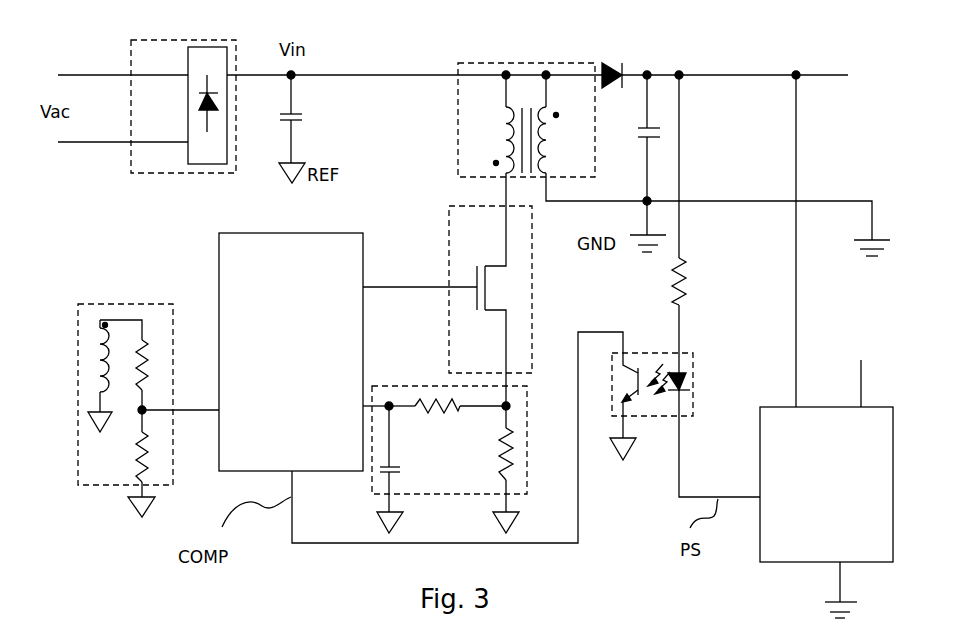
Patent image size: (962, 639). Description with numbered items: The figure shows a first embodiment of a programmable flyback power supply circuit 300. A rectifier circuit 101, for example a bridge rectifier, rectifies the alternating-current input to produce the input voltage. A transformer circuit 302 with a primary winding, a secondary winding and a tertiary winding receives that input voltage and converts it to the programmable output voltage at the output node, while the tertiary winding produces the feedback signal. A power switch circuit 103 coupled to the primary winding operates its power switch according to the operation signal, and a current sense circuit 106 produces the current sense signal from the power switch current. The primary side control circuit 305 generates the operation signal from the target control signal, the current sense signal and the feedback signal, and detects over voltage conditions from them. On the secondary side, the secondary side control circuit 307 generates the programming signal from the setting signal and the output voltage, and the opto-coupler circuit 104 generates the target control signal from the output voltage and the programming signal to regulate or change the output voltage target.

The programmable flyback power supply circuit 300 is at (841, 40).
The rectifier circuit 101 is at (165, 164).
The transformer circuit 302 is at (537, 63).
The power switch circuit 103 is at (492, 239).
The opto-coupler circuit 104 is at (637, 353).
The current sense circuit 106 is at (372, 480).
The primary side control circuit 305 is at (264, 264).
The secondary side control circuit 307 is at (811, 555).